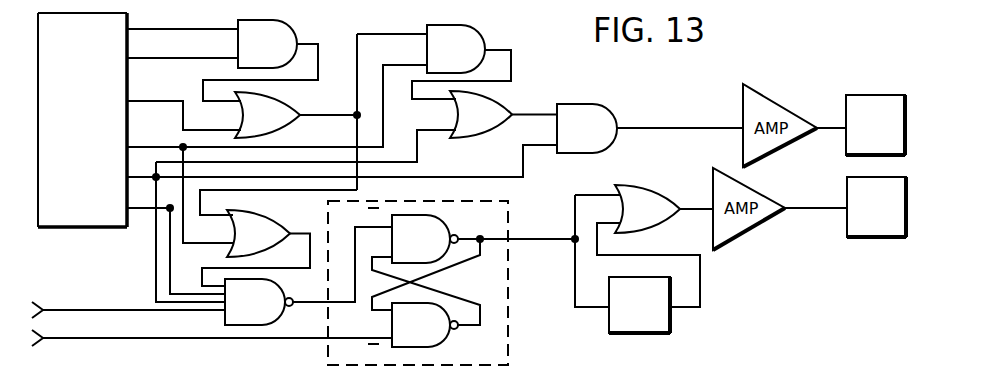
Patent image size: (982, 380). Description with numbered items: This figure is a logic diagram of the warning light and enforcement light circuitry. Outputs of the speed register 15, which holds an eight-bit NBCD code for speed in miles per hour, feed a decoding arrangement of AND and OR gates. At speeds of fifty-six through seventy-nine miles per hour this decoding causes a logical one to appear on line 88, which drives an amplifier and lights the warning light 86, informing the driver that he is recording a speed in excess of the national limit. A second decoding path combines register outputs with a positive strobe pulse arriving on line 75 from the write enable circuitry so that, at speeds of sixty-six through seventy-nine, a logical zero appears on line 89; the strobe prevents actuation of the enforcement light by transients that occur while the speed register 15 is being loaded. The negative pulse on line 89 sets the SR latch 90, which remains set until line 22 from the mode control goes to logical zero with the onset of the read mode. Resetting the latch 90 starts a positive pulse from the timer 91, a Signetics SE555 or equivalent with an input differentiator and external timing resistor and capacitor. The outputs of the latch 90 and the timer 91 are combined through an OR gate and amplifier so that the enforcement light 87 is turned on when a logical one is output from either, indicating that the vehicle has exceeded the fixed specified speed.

The speed register 15 is at (92, 228).
The line from mode control 22 is at (128, 338).
The strobe line 75 is at (117, 310).
The warning light 86 is at (846, 97).
The enforcement light 87 is at (847, 180).
The line 88 is at (677, 128).
The line 89 is at (322, 305).
The SR latch 90 is at (508, 338).
The timer 91 is at (672, 318).